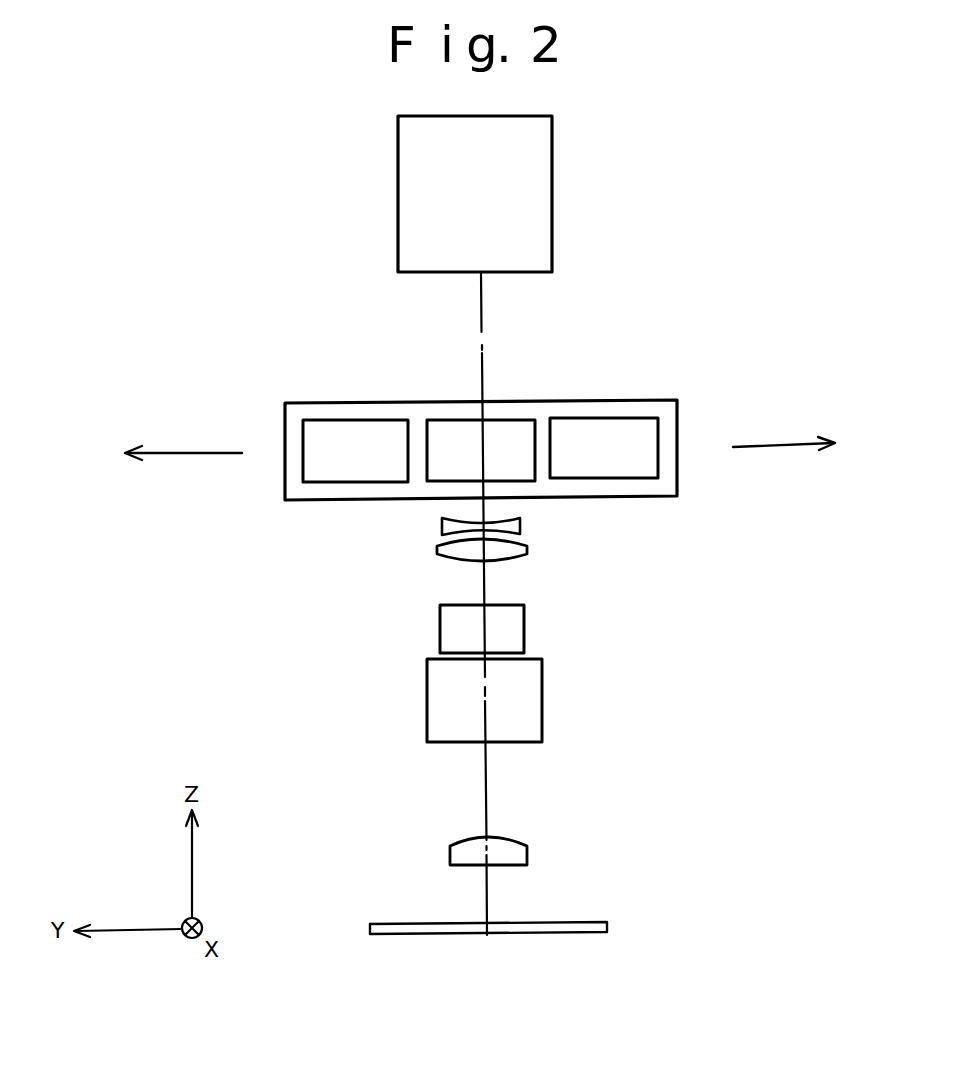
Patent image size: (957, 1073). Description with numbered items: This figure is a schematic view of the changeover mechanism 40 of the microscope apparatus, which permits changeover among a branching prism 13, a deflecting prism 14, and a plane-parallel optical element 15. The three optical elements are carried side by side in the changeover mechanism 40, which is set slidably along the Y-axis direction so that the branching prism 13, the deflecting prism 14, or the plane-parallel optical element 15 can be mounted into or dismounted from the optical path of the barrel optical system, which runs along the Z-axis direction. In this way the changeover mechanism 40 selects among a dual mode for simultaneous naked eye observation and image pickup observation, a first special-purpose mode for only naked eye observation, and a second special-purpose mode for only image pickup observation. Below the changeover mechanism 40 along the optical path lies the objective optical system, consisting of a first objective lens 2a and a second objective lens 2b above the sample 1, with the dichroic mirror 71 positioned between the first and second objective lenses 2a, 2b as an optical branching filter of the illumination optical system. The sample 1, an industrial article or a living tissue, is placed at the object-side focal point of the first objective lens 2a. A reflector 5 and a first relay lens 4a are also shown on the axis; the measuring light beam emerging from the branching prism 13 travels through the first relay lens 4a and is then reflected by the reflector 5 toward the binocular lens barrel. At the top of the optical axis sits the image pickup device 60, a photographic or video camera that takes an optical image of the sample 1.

The image pickup device 60 is at (553, 190).
The changeover mechanism 40 is at (663, 497).
The deflecting prism 14 is at (350, 428).
The branching prism 13 is at (513, 424).
The plane-parallel optical element 15 is at (641, 428).
The first relay lens 4a is at (440, 525).
The second objective lens 2b is at (528, 548).
The reflector 5 is at (525, 627).
The dichroic mirror 71 is at (543, 705).
The first objective lens 2a is at (529, 852).
The sample 1 is at (597, 922).